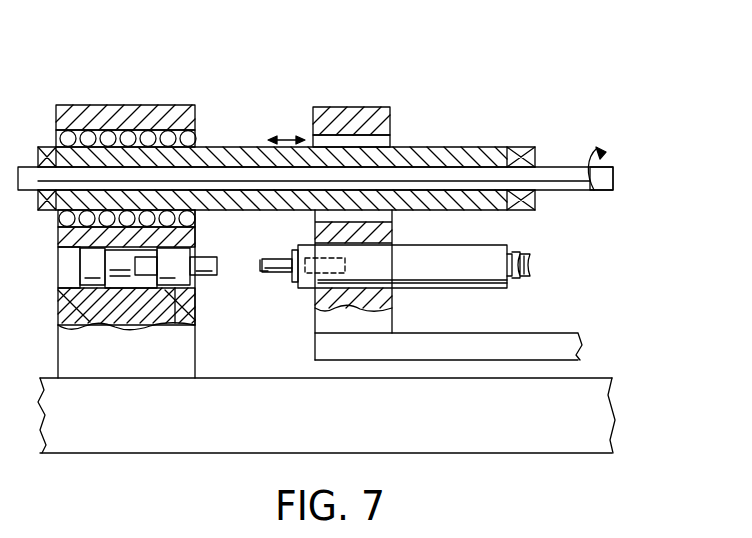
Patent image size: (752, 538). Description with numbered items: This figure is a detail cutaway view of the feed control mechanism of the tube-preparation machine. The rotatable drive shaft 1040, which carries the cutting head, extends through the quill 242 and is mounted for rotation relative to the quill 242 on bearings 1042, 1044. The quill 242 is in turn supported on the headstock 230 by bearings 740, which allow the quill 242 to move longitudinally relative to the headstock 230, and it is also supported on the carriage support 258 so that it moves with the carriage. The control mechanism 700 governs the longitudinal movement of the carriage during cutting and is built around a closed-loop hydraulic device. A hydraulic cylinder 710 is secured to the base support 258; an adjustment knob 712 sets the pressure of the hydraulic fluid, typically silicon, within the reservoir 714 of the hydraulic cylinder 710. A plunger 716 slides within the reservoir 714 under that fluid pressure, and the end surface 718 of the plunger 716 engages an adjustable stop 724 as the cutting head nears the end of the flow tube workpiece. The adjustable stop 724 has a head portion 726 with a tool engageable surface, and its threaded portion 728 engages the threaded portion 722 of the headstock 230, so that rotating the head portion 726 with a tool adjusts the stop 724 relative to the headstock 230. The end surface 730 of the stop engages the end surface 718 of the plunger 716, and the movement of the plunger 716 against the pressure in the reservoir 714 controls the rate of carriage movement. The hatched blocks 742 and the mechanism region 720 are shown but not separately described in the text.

The headstock 230 is at (143, 106).
The hatched bearing block 742 is at (107, 130).
The bearings 740 is at (58, 138).
The bearing 1042 is at (57, 202).
The bearing 1044 is at (535, 193).
The quill 242 is at (250, 147).
The rotatable drive shaft 1040 is at (555, 170).
The carriage support 258 is at (343, 107).
The hydraulic cylinder 710 is at (463, 273).
The reservoir 714 is at (375, 267).
The adjustment knob 712 is at (532, 263).
The plunger 716 is at (265, 258).
The end surface 718 is at (260, 268).
The end surface 730 is at (217, 268).
The threaded portion 728 is at (195, 302).
The threaded portion 722 is at (172, 280).
The head portion 726 is at (95, 275).
The adjustable stop 724 is at (53, 270).
The clamp mechanism 720 is at (72, 290).
The control mechanism 700 is at (516, 229).